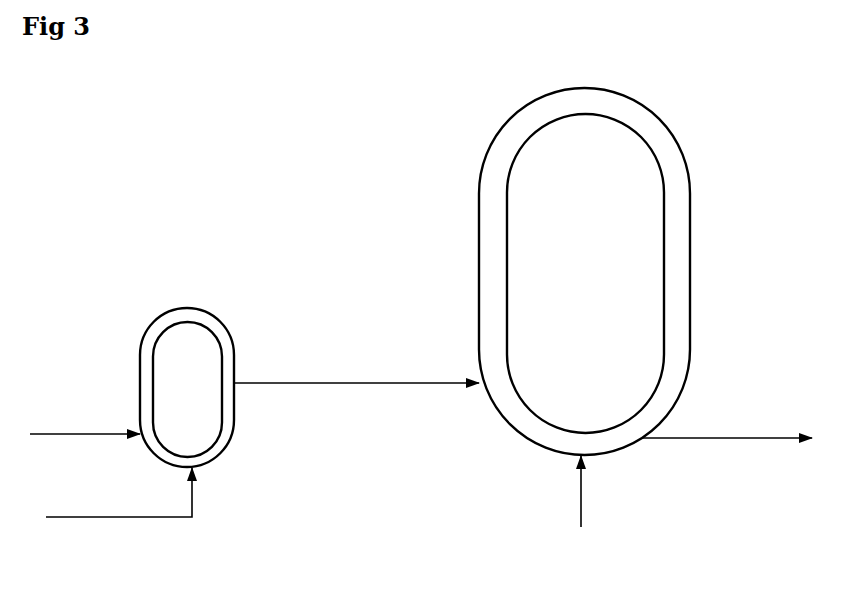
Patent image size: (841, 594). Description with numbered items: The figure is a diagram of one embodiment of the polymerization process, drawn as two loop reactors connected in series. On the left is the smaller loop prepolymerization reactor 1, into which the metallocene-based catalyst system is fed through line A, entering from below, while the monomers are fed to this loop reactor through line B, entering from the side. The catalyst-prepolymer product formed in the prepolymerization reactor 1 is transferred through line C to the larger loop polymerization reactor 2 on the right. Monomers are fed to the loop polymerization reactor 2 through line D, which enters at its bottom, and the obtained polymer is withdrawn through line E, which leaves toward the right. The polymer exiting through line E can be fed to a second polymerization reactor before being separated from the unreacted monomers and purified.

The loop prepolymerization reactor 1 is at (207, 333).
The loop polymerization reactor 2 is at (688, 171).
The line A is at (120, 517).
The line B is at (93, 434).
The line C is at (378, 383).
The line D is at (582, 508).
The line E is at (725, 438).